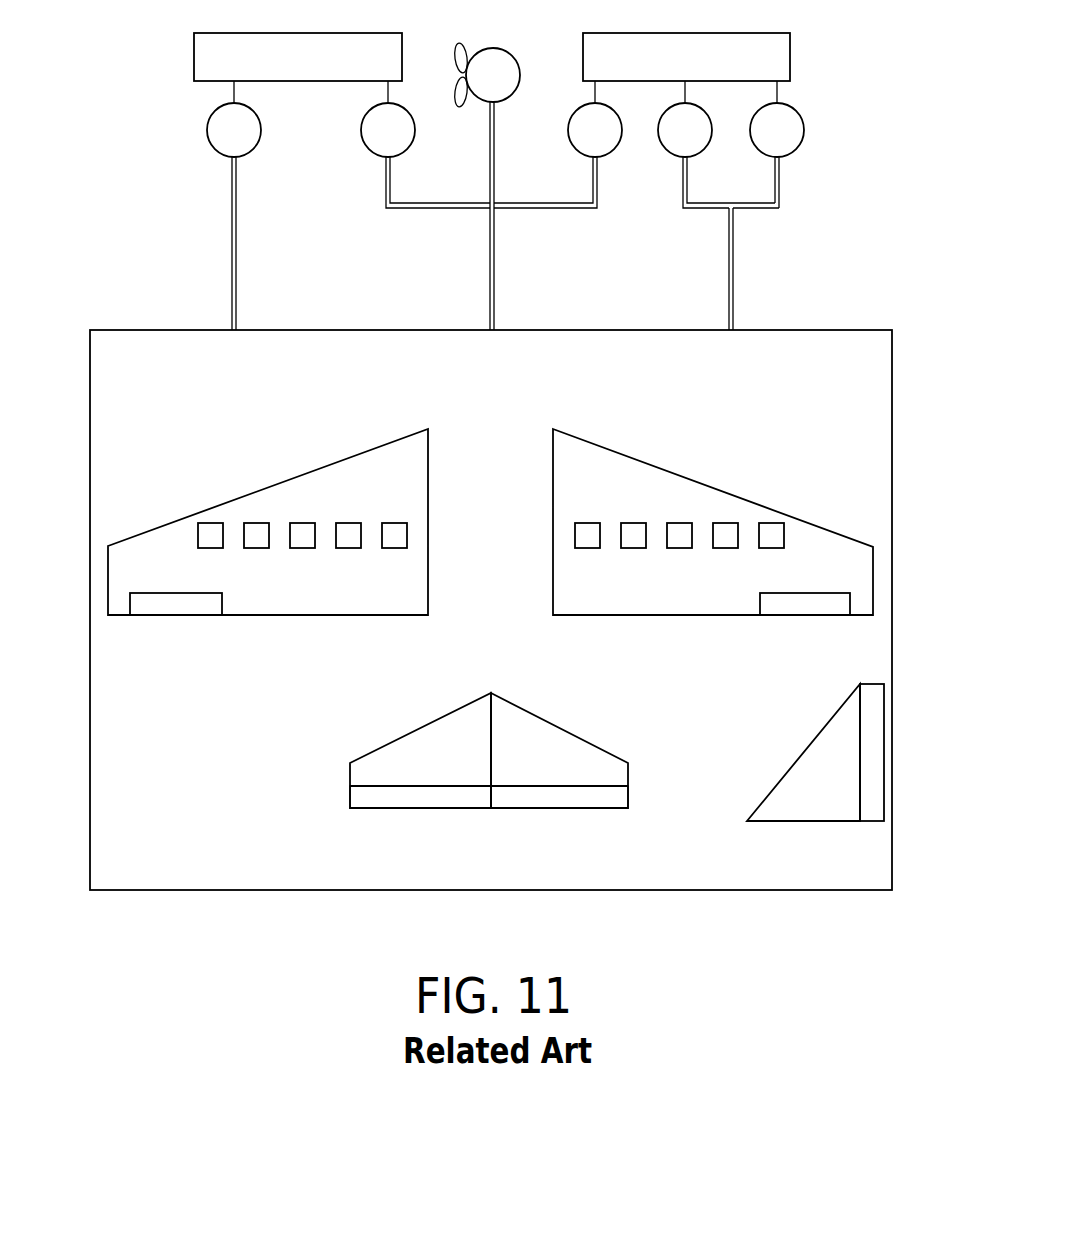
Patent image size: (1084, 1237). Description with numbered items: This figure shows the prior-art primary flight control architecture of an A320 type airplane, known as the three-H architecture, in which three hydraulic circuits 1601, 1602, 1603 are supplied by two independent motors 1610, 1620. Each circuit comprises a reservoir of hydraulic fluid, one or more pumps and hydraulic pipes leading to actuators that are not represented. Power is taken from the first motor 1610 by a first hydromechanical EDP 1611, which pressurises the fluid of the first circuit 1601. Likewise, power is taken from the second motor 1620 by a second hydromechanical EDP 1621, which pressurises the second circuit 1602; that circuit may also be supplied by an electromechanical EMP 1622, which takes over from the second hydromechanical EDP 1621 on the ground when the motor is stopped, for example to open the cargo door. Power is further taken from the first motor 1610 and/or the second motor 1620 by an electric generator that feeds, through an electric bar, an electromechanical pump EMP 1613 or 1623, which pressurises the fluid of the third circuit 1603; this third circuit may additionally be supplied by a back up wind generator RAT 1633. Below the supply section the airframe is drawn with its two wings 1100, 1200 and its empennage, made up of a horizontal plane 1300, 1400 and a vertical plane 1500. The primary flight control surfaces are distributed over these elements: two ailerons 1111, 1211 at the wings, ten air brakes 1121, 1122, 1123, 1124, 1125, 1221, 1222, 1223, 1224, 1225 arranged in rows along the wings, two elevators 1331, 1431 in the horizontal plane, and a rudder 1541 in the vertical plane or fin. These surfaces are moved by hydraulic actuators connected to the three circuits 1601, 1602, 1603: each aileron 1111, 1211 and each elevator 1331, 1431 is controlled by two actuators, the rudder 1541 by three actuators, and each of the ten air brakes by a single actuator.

The wing 1100 is at (323, 463).
The aileron 1111 is at (200, 603).
The air brake 1121 is at (394, 537).
The air brake 1122 is at (347, 533).
The air brake 1123 is at (302, 535).
The air brake 1124 is at (256, 533).
The air brake 1125 is at (209, 535).
The wing 1200 is at (665, 465).
The aileron 1211 is at (793, 602).
The air brake 1221 is at (775, 537).
The air brake 1222 is at (729, 533).
The air brake 1223 is at (682, 537).
The air brake 1224 is at (631, 533).
The air brake 1225 is at (590, 537).
The horizontal plane 1300 is at (390, 740).
The elevator 1331 is at (398, 800).
The horizontal plane 1400 is at (570, 730).
The elevator 1431 is at (590, 800).
The vertical plane 1500 is at (805, 748).
The rudder 1541 is at (874, 808).
The first hydraulic circuit 1601 is at (252, 307).
The second hydraulic circuit 1602 is at (748, 298).
The third hydraulic circuit 1603 is at (510, 305).
The first motor 1610 is at (208, 57).
The first hydromechanical EDP 1611 is at (227, 143).
The electromechanical pump EMP 1613 is at (378, 145).
The second motor 1620 is at (775, 60).
The second hydromechanical EDP 1621 is at (788, 138).
The electromechanical EMP 1622 is at (676, 145).
The electromechanical pump EMP 1623 is at (590, 143).
The back up wind generator RAT 1633 is at (492, 65).